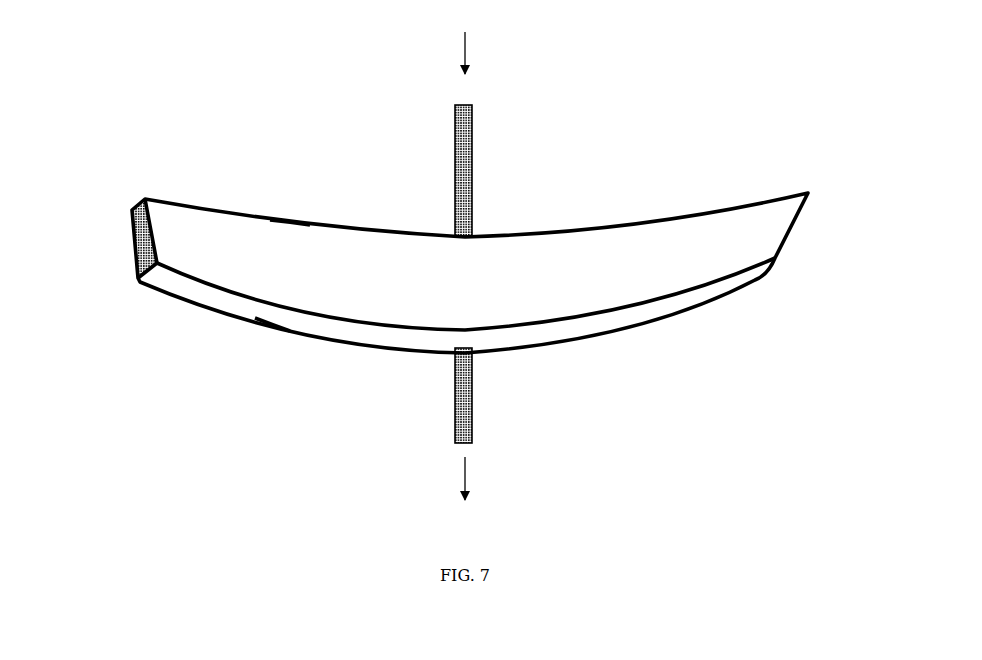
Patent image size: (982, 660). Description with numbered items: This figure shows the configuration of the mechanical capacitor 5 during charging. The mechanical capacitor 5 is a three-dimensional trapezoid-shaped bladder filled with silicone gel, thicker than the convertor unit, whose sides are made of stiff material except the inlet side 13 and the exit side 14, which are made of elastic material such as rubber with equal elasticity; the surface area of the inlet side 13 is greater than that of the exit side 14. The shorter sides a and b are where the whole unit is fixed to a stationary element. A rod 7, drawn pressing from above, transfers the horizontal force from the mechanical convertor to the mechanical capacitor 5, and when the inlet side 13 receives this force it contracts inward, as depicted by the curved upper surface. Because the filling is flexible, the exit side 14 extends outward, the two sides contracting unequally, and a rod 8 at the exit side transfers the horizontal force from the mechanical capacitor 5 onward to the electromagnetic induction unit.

The mechanical capacitor 5 is at (470, 273).
The rod 7 is at (473, 134).
The rod 8 is at (476, 424).
The inlet side 13 is at (293, 222).
The exit side 14 is at (273, 312).
The shorter side a is at (798, 223).
The shorter side b is at (133, 250).